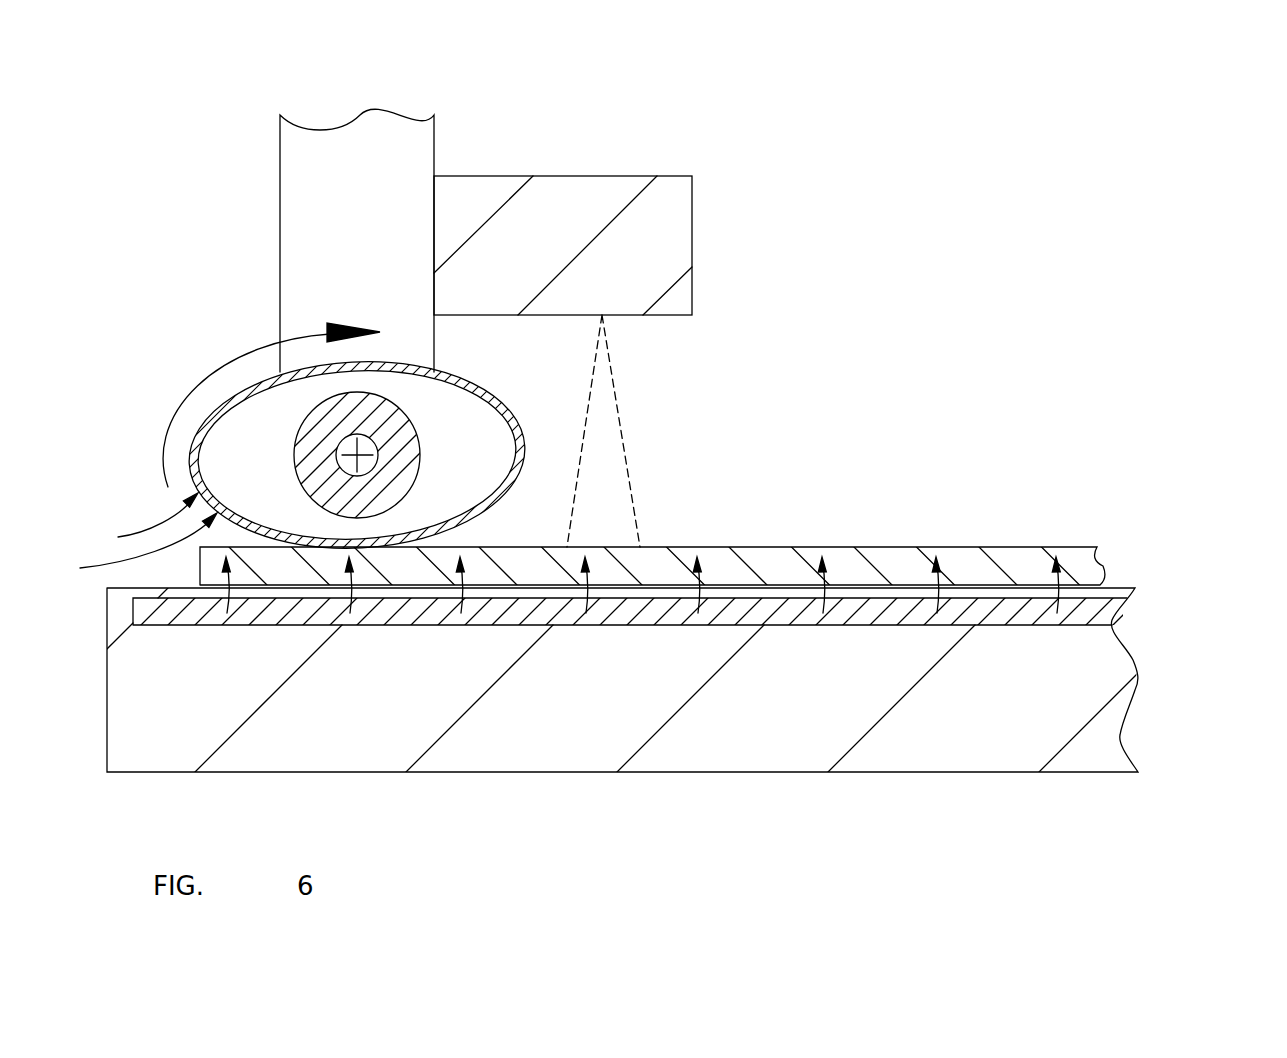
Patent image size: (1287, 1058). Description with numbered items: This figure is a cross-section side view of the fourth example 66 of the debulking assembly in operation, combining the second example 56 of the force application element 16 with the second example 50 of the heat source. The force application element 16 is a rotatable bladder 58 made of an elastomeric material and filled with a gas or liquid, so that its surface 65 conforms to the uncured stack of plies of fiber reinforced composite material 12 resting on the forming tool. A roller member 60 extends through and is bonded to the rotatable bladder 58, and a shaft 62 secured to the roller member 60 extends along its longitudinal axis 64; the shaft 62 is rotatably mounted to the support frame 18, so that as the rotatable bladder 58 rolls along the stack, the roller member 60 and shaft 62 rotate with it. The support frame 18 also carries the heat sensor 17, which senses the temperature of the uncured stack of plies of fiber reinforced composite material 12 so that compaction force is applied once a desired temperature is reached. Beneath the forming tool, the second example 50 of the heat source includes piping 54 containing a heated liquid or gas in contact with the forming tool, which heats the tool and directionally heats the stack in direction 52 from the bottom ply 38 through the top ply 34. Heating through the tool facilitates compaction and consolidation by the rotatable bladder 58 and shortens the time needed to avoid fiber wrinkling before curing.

The uncured stack of plies of fiber reinforced composite material 12 is at (1080, 567).
The force application element 16 is at (410, 560).
The heat sensor 17 is at (658, 210).
The support frame 18 is at (325, 178).
The top ply 34 is at (947, 547).
The bottom ply 38 is at (873, 592).
The second example of heat source 50 is at (1057, 640).
The direction 52 is at (1189, 580).
The piping 54 is at (373, 636).
The second example of force application element 56 is at (137, 523).
The rotatable bladder 58 is at (130, 549).
The roller member 60 is at (400, 462).
The shaft 62 is at (358, 456).
The longitudinal axis 64 is at (395, 383).
The surface 65 is at (520, 440).
The apparatus 66 is at (757, 98).